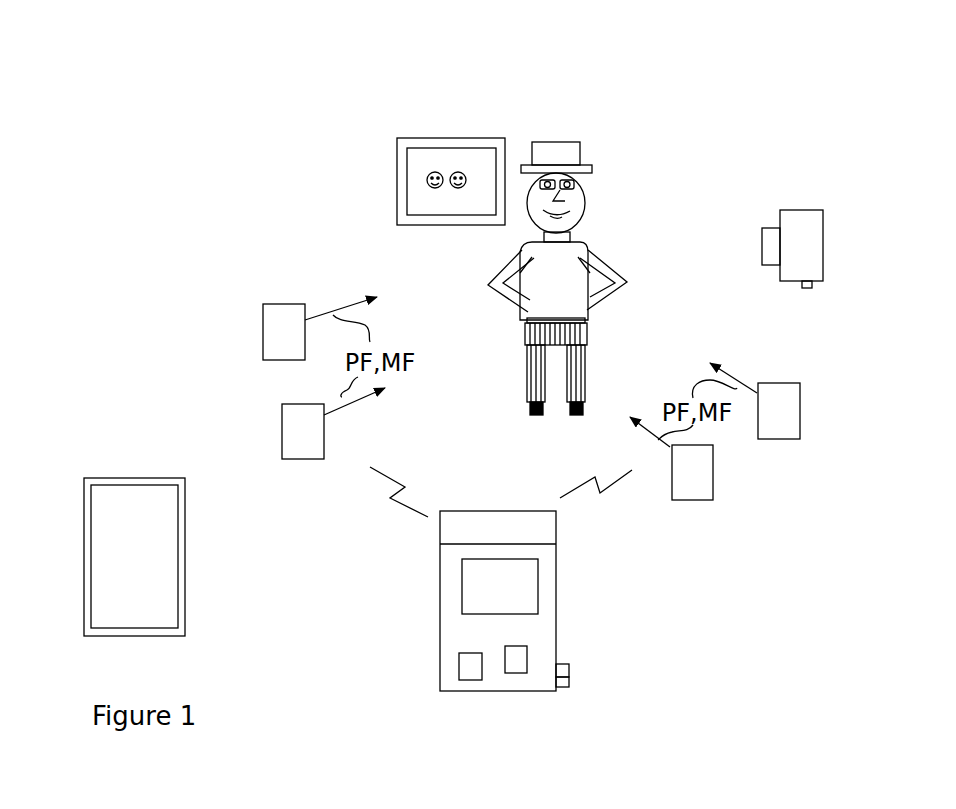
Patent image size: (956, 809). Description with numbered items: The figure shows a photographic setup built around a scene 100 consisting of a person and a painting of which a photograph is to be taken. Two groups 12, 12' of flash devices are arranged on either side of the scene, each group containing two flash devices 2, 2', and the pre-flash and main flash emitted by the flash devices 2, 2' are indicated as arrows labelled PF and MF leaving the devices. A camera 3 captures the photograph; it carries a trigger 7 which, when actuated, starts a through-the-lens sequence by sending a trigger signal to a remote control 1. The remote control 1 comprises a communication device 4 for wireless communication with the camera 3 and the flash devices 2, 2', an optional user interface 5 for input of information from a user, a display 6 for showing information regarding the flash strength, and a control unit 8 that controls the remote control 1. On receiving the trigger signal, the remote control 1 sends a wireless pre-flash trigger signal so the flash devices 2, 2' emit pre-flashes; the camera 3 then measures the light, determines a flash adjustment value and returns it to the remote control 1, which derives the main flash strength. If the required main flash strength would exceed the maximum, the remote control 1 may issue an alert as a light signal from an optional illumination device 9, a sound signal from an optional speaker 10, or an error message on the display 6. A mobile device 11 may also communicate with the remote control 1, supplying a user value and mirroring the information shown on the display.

The scene 100 is at (318, 105).
The remote control 1 is at (448, 570).
The flash device 2 is at (271, 378).
The flash device 2' is at (715, 455).
The camera 3 is at (802, 217).
The communication device 4 is at (447, 527).
The user interface 5 is at (465, 672).
The display 6 is at (525, 598).
The trigger 7 is at (805, 290).
The control unit 8 is at (516, 655).
The illumination device 9 is at (569, 665).
The speaker 10 is at (569, 682).
The mobile device 11 is at (185, 557).
The group of flash devices 12 is at (97, 342).
The group of flash devices 12' is at (837, 478).